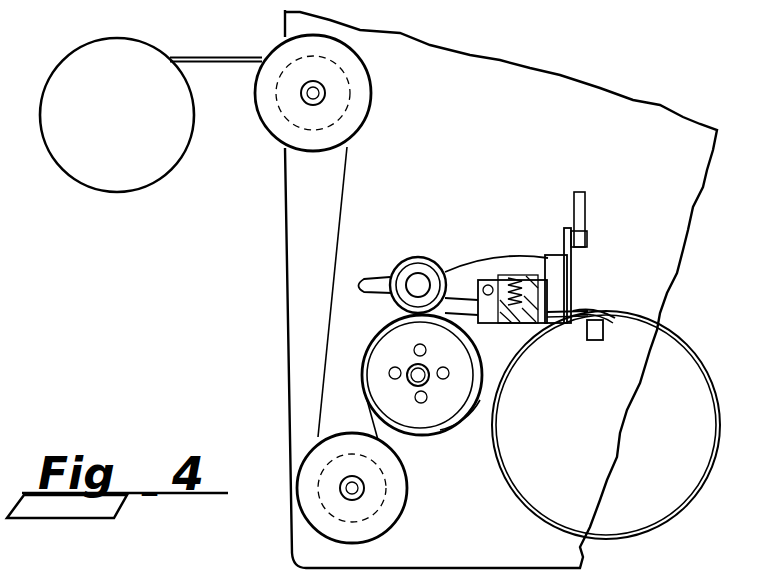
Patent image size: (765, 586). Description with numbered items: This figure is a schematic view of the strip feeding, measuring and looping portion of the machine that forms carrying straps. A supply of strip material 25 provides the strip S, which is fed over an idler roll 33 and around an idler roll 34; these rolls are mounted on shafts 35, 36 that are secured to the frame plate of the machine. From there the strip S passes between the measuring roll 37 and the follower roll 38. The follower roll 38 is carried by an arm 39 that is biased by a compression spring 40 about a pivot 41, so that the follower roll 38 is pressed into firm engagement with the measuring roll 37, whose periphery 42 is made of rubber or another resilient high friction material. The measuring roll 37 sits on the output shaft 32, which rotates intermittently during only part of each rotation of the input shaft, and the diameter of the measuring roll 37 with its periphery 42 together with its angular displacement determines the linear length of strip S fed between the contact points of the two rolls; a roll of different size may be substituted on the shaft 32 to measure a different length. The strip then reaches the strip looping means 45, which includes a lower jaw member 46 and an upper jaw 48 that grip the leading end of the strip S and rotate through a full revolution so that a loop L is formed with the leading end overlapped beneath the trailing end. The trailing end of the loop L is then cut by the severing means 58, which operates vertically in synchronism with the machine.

The supply of strip material 25 is at (130, 123).
The strip material S is at (228, 57).
The idler roll 33 is at (358, 83).
The shaft 35 is at (310, 96).
The idler roll 34 is at (305, 470).
The shaft 36 is at (348, 490).
The measuring roll 37 is at (390, 348).
The output shaft 32 is at (418, 380).
The high friction periphery 42 is at (458, 432).
The follower roll 38 is at (416, 257).
The arm 39 is at (457, 274).
The pivot 41 is at (489, 285).
The compression spring 40 is at (518, 283).
The severing means 58 is at (553, 273).
The upper jaw 48 is at (591, 312).
The lower jaw member 46 is at (595, 341).
The strip looping means 45 is at (620, 300).
The loop L is at (698, 357).